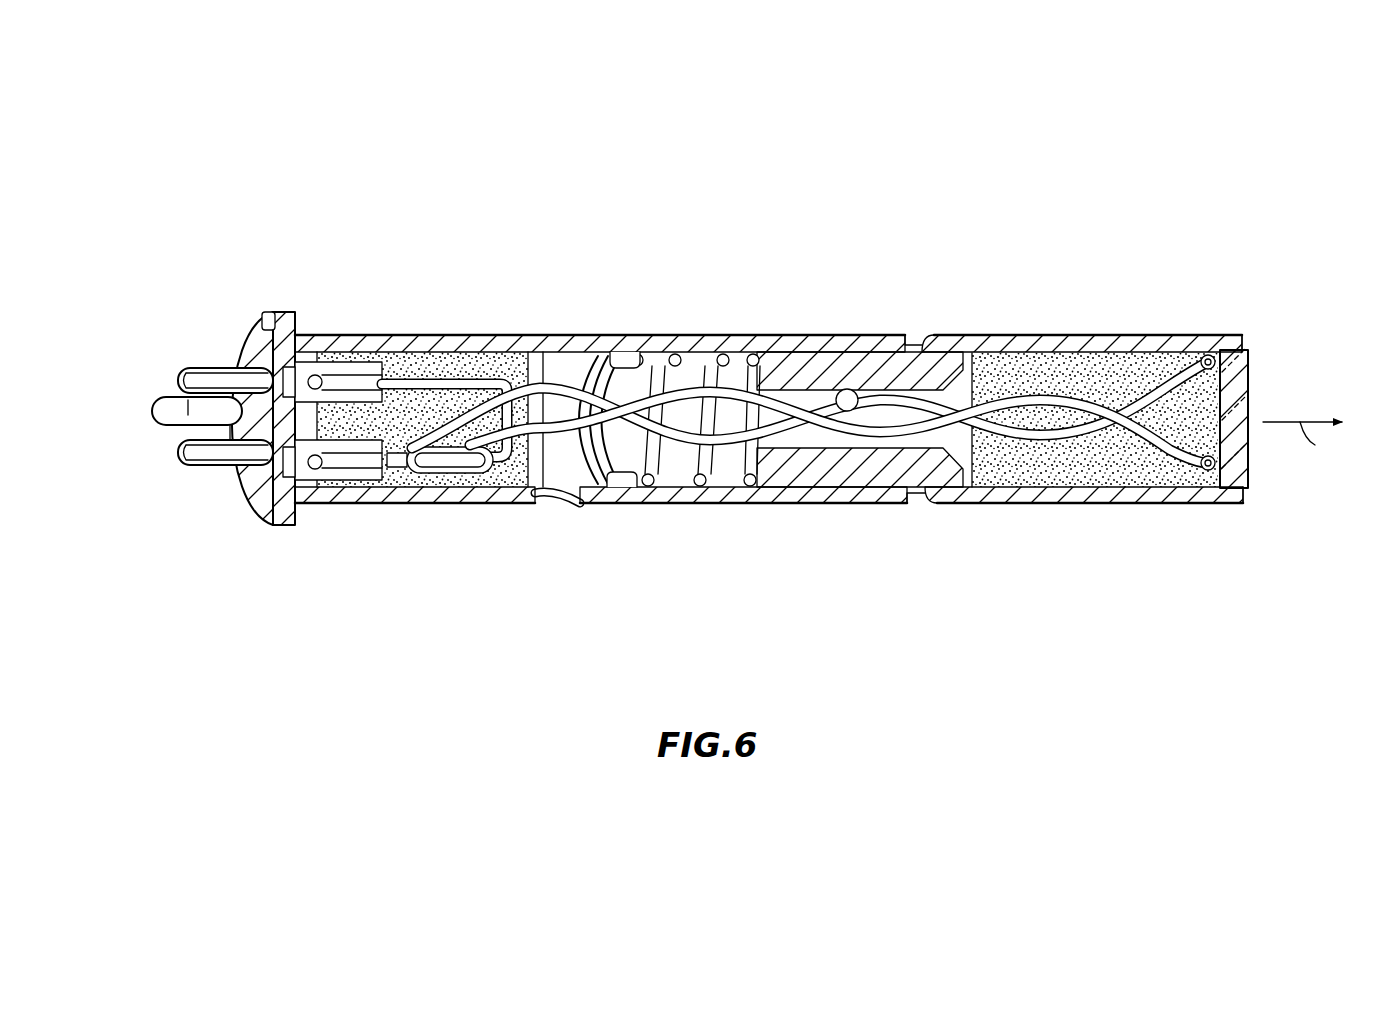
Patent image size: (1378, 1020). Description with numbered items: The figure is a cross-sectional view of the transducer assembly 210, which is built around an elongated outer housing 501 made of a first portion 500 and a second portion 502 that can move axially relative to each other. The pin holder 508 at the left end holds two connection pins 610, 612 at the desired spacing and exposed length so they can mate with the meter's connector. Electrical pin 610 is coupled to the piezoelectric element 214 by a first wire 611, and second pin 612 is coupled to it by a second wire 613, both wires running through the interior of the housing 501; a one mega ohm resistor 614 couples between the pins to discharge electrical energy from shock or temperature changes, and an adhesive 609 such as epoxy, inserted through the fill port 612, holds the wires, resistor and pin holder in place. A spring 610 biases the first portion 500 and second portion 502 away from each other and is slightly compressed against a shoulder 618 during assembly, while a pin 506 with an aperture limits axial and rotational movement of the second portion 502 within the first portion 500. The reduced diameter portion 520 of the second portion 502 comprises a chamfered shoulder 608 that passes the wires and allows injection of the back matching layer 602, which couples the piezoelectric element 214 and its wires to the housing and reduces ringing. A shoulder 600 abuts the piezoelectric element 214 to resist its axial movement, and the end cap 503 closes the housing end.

The transducer assembly 210 is at (150, 250).
The pin holder 508 is at (257, 335).
The spring / electrical pin 610 is at (205, 368).
The second pin / epoxy fill port 612 is at (175, 455).
The first wire 611 is at (543, 355).
The shoulder 618 is at (617, 355).
The first portion 500 is at (688, 335).
The reduced diameter portion 520 is at (913, 345).
The back matching layer 602 is at (1048, 358).
The second portion 502 is at (1088, 325).
The shoulder 600 is at (1235, 347).
The end cap 503 is at (1252, 377).
The piezoelectric element 214 is at (1248, 470).
The adhesive 609 is at (390, 487).
The resistor 614 is at (427, 473).
The second wire 613 is at (537, 497).
The shoulder 608 is at (750, 485).
The pin 506 is at (850, 412).
The elongated outer housing 501 is at (303, 605).